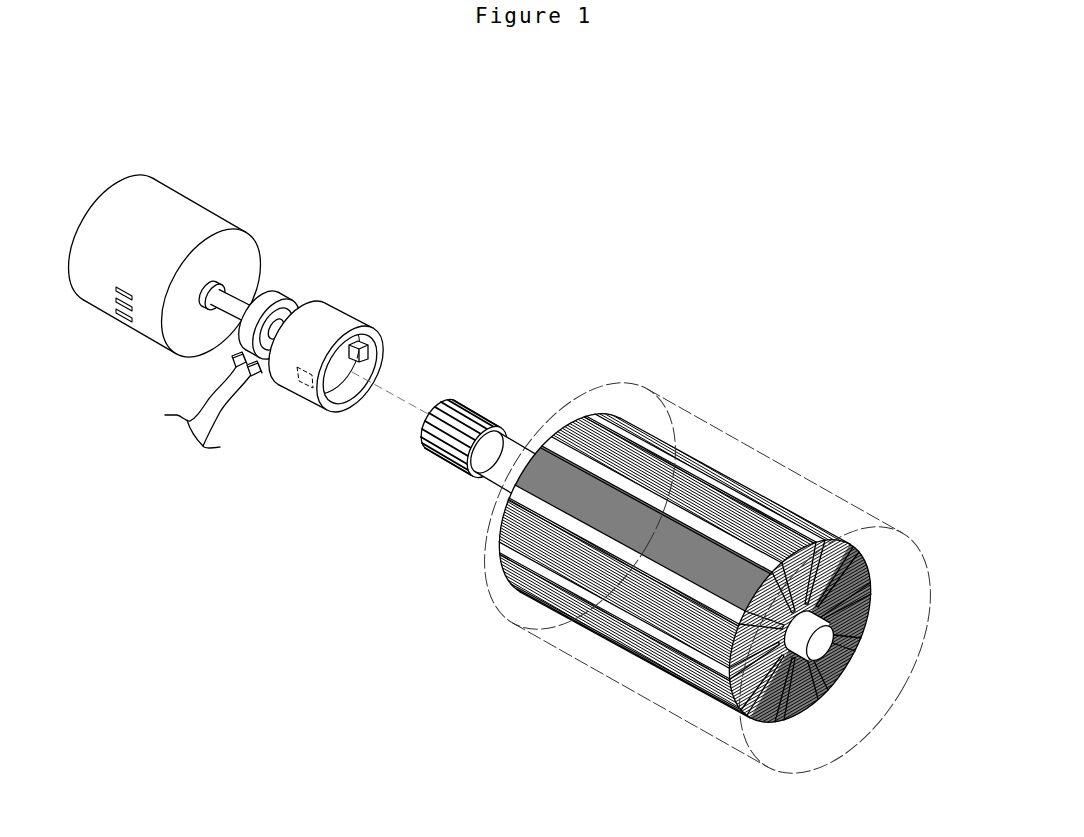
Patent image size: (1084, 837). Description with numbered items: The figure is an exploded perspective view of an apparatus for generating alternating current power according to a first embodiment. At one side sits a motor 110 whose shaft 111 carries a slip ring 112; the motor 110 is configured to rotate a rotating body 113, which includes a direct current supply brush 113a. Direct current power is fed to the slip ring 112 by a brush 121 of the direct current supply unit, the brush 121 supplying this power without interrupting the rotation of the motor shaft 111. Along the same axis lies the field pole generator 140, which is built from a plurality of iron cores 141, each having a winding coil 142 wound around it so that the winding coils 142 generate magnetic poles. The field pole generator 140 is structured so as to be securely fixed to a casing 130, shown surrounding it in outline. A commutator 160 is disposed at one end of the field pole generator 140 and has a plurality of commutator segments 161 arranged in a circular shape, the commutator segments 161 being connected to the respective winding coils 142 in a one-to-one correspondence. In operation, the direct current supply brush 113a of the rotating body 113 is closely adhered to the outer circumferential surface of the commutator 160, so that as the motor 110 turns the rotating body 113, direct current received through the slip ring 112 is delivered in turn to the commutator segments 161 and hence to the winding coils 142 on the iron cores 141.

The motor 110 is at (180, 218).
The shaft 111 is at (237, 298).
The slip ring 112 is at (270, 292).
The rotating body 113 is at (350, 324).
The direct current supply brush 113a is at (372, 352).
The brush 121 is at (233, 361).
The casing 130 is at (706, 420).
The field pole generator 140 is at (766, 490).
The iron cores 141 is at (527, 502).
The winding coil 142 is at (518, 525).
The commutator 160 is at (494, 401).
The commutator segments 161 is at (427, 400).